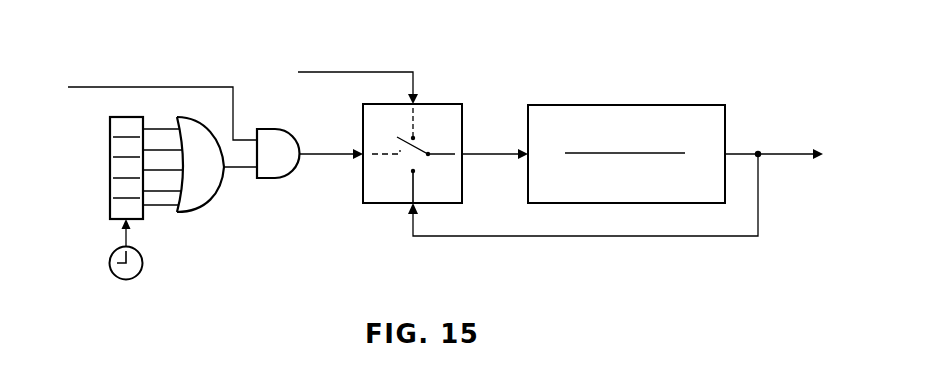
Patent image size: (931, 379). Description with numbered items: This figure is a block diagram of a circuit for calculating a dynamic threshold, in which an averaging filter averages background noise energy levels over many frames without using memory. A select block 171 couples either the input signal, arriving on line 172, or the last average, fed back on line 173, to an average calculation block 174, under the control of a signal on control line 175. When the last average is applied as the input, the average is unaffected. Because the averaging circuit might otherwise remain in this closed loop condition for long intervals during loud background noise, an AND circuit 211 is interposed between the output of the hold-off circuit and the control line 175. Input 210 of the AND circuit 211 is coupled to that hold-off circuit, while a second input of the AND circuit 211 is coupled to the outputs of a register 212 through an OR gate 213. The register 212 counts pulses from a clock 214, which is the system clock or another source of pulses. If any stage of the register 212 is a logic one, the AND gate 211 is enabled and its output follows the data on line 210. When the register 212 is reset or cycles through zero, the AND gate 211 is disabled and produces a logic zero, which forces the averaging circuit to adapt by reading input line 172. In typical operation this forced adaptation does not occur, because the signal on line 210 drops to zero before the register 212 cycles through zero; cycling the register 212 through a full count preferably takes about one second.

The input line 210 is at (168, 85).
The AND circuit 211 is at (277, 180).
The register 212 is at (108, 153).
The OR gate 213 is at (187, 212).
The clock 214 is at (126, 280).
The select block 171 is at (438, 103).
The input signal line 172 is at (340, 72).
The last average line 173 is at (428, 237).
The average calculation block 174 is at (617, 103).
The control line 175 is at (330, 150).